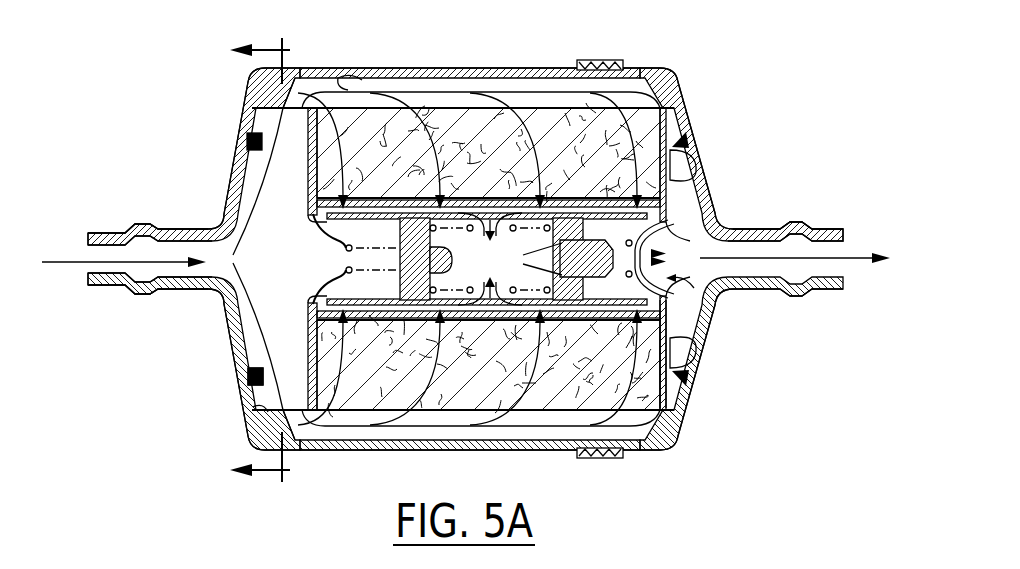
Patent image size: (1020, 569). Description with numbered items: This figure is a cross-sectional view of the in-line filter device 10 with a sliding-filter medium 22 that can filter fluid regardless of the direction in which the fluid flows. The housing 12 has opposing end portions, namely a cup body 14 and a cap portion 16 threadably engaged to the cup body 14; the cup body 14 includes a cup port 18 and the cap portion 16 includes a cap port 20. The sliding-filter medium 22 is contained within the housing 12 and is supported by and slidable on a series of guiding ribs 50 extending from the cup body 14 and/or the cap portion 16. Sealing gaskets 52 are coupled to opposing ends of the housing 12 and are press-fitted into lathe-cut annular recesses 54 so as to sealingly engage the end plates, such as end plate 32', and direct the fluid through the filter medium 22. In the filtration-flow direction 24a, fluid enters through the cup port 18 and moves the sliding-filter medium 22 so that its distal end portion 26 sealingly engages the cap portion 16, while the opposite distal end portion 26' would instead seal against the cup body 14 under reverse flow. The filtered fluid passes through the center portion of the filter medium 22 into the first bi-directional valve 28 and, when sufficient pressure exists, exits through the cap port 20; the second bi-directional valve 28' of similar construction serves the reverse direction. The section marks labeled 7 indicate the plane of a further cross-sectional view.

The in-line filter device 10 is at (102, 160).
The housing 12 is at (236, 75).
The cup body 14 is at (232, 176).
The cap portion 16 is at (690, 108).
The cup port 18 is at (86, 243).
The cap port 20 is at (846, 243).
The sliding-filter medium 22 is at (466, 108).
The filtration-flow direction 24a is at (60, 284).
The distal end portion 26 is at (712, 374).
The distal end portion 26' is at (203, 359).
The first bi-directional valve 28 is at (663, 297).
The second bi-directional valve 28' is at (411, 259).
The end plate 32' is at (409, 257).
The guiding ribs 50 is at (362, 78).
The sealing gasket 52 is at (686, 142).
The annular recess 54 is at (676, 168).
The section line 7- 7 is at (260, 260).